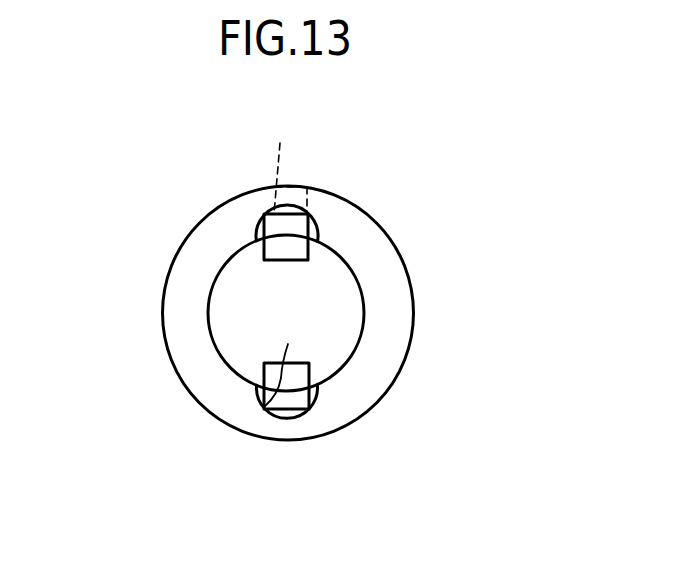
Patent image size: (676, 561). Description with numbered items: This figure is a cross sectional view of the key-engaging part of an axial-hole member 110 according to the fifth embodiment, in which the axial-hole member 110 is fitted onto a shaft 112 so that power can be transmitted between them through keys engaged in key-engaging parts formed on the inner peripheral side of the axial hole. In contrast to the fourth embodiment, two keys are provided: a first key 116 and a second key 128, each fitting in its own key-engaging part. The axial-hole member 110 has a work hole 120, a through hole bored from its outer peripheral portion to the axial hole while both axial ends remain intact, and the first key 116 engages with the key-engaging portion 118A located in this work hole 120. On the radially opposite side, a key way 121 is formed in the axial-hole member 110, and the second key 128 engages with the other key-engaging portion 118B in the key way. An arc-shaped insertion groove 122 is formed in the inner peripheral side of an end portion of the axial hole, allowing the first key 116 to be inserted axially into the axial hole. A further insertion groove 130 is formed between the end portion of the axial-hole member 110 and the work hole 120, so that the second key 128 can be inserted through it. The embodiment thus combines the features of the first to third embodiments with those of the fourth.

The axial-hole member 110 is at (395, 278).
The shaft 112 is at (352, 310).
The first key 116 is at (306, 370).
The key-engaging portion 118A is at (248, 227).
The key-engaging portion 118B is at (248, 397).
The work hole 120 is at (286, 164).
The key way 121 is at (286, 360).
The insertion groove 122 is at (312, 415).
The second key 128 is at (309, 257).
The insertion groove 130 is at (282, 214).